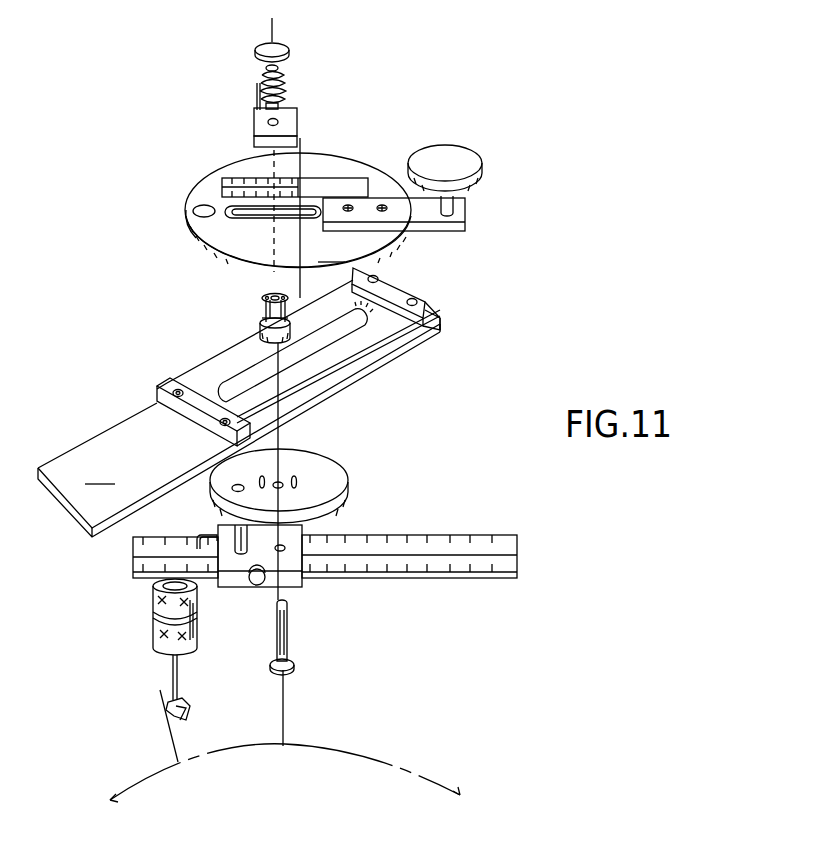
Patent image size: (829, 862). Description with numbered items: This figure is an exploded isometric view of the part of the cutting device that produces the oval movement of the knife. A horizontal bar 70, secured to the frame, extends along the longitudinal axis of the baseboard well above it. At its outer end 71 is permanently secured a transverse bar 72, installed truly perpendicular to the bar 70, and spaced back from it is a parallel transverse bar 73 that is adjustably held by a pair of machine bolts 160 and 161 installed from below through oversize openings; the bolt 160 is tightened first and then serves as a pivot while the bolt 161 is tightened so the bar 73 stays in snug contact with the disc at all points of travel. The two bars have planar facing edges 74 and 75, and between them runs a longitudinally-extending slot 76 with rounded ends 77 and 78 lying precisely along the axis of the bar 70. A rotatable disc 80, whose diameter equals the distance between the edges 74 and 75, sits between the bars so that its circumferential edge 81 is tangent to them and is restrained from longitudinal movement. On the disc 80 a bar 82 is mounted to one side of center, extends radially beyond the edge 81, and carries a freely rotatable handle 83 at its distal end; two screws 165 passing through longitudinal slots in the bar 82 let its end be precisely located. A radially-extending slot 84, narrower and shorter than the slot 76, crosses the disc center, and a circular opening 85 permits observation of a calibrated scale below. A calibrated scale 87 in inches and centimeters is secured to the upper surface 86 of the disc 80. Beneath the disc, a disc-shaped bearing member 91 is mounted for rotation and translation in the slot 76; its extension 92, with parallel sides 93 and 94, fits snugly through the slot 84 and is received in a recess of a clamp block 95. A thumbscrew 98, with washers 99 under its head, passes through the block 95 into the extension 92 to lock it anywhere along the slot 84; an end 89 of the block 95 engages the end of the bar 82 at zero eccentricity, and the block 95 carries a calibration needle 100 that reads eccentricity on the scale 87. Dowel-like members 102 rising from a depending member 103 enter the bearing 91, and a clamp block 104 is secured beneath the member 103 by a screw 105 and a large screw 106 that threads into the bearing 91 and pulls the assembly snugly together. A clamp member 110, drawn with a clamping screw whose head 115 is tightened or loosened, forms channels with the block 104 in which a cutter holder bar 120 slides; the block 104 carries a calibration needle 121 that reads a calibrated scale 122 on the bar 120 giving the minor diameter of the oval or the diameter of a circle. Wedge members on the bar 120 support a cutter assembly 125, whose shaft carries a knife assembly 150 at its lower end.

The horizontal bar 70 is at (239, 430).
The outer end 71 is at (438, 317).
The transverse bar 72 is at (402, 293).
The parallel transverse bar 73 is at (156, 392).
The planar facing edge 74 is at (440, 336).
The planar facing edge 75 is at (187, 377).
The longitudinally-extending slot 76 is at (342, 348).
The rounded end 77 is at (372, 320).
The rounded end 78 is at (230, 387).
The rotatable disc 80 is at (345, 168).
The circumferential edge 81 is at (190, 240).
The bar 82 is at (376, 196).
The handle 83 is at (479, 165).
The radially-extending slot 84 is at (265, 220).
The circular opening 85 is at (194, 210).
The upper surface 86 is at (331, 250).
The calibrated scale 87 is at (235, 180).
The end of clamp block 89 is at (298, 141).
The disc-shaped bearing member 91 is at (262, 337).
The extension 92 is at (266, 312).
The parallel side 93 is at (263, 297).
The parallel side 94 is at (287, 322).
The clamp block 95 is at (291, 118).
The thumbscrew 98 is at (282, 44).
The washers 99 is at (283, 80).
The calibration needle 100 is at (256, 99).
The dowel-like members 102 is at (294, 475).
The depending member 103 is at (340, 482).
The clamp block 104 is at (324, 530).
The screw 105 is at (232, 488).
The large screw 106 is at (291, 628).
The clamp member 110 is at (300, 585).
The head 115 is at (260, 588).
The cutter holder bar 120 is at (478, 578).
The calibration needle 121 is at (198, 540).
The calibrated scale 122 is at (450, 540).
The cutter assembly 125 is at (148, 626).
The knife assembly 150 is at (156, 718).
The machine bolt 160 is at (224, 426).
The machine bolt 161 is at (178, 397).
The screws 165 is at (383, 211).